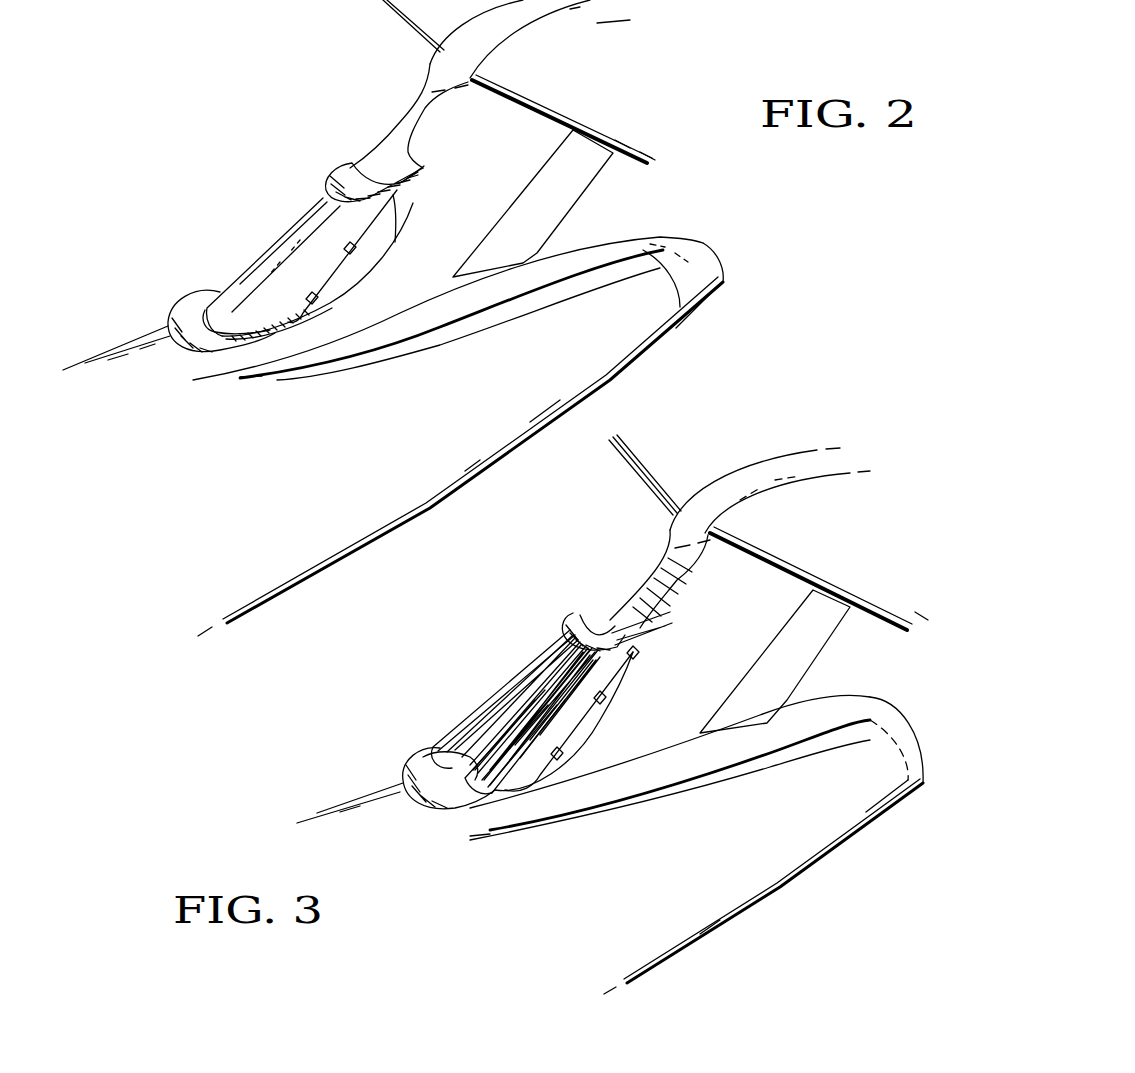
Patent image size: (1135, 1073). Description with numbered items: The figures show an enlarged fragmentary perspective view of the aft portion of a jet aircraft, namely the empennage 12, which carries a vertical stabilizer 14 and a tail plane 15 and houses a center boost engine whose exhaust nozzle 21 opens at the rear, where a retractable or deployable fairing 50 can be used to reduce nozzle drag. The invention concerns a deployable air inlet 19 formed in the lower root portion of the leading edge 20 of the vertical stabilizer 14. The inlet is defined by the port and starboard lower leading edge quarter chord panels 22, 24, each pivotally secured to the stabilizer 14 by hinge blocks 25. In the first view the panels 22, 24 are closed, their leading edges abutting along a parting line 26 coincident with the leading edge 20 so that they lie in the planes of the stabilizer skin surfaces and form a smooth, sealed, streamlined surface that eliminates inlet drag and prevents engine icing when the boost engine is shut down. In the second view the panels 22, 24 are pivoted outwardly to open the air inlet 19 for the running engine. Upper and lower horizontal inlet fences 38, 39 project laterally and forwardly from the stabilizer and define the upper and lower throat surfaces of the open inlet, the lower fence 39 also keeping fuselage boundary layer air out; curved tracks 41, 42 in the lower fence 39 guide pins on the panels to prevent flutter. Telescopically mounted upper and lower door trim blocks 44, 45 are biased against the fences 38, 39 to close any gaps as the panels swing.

In FIG. 2, the empennage 12 is at (600, 211).
In FIG. 3, the empennage 12 is at (860, 666).
In FIG. 2, the vertical stabilizer 14 is at (498, 164).
In FIG. 3, the vertical stabilizer 14 is at (751, 607).
In FIG. 2, the tail plane 15 is at (427, 22).
In FIG. 3, the tail plane 15 is at (672, 485).
In FIG. 2, the air inlet 19 is at (248, 248).
In FIG. 3, the air inlet 19 is at (420, 768).
In FIG. 2, the leading edge 20 is at (393, 133).
In FIG. 3, the leading edge 20 is at (627, 600).
In FIG. 2, the exhaust nozzle 21 is at (705, 242).
In FIG. 3, the exhaust nozzle 21 is at (927, 739).
In FIG. 2, the port lower leading edge quarter chord panel 22 is at (378, 268).
In FIG. 3, the port lower leading edge quarter chord panel 22 is at (610, 673).
In FIG. 2, the starboard lower leading edge quarter chord panel 24 is at (277, 240).
In FIG. 3, the starboard lower leading edge quarter chord panel 24 is at (503, 680).
In FIG. 2, the hinge blocks 25 is at (354, 249).
In FIG. 3, the hinge blocks 25 is at (640, 653).
In FIG. 2, the parting line 26 is at (247, 268).
In FIG. 2, the upper inlet fence 38 is at (338, 174).
In FIG. 3, the upper inlet fence 38 is at (600, 617).
In FIG. 2, the lower inlet fence 39 is at (176, 326).
In FIG. 3, the lower inlet fence 39 is at (413, 801).
In FIG. 3, the port track 41 is at (483, 782).
In FIG. 3, the starboard track 42 is at (423, 757).
In FIG. 2, the upper door trim blocks 44 is at (322, 197).
In FIG. 3, the upper door trim blocks 44 is at (655, 619).
In FIG. 2, the lower door trim blocks 45 is at (205, 312).
In FIG. 2, the retractable/deployable fairing 50 is at (720, 284).